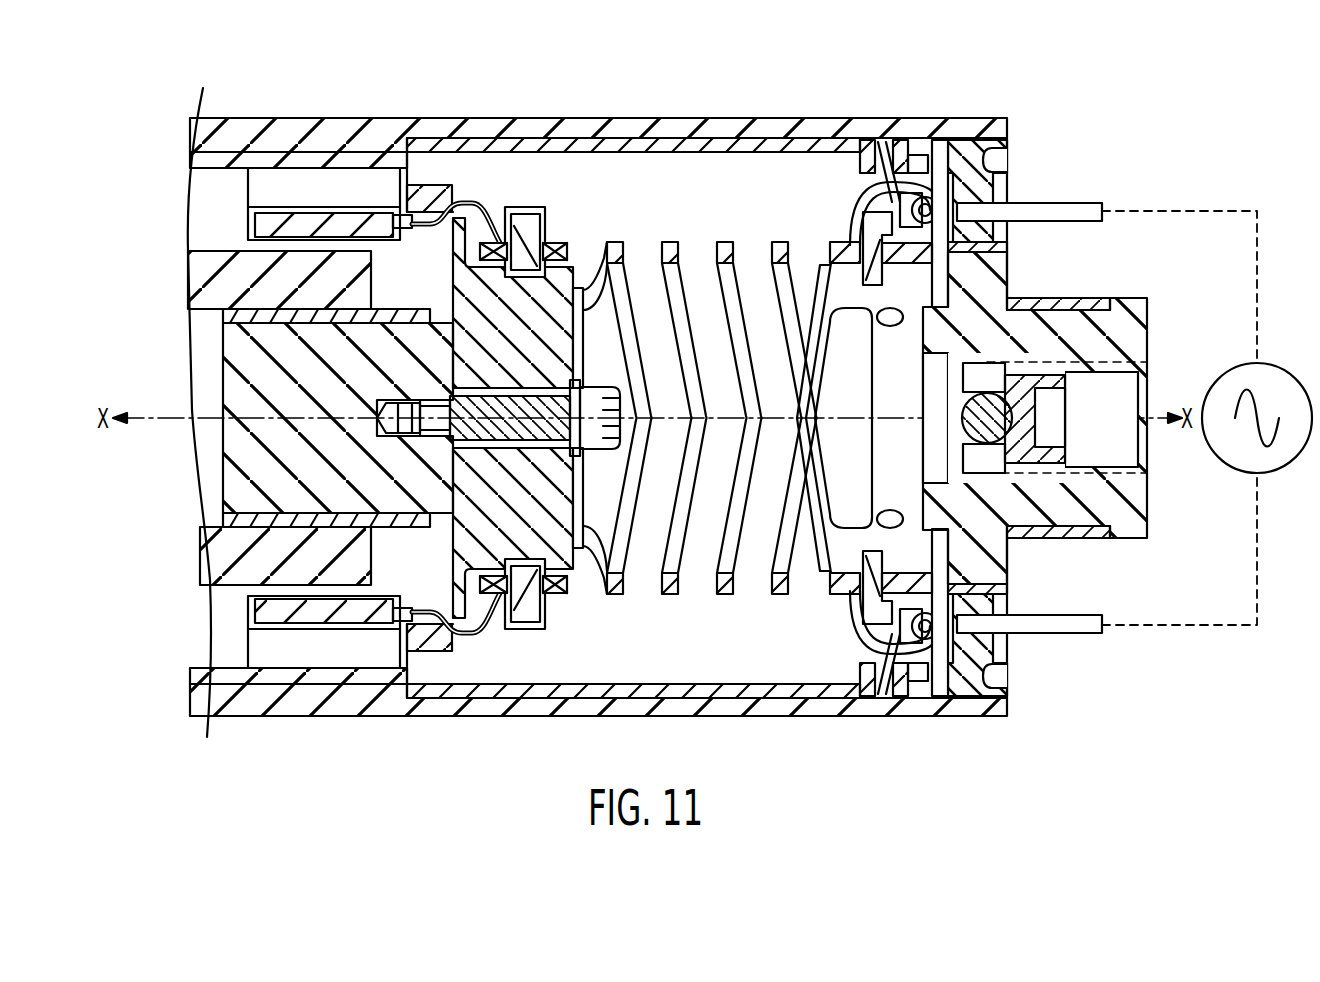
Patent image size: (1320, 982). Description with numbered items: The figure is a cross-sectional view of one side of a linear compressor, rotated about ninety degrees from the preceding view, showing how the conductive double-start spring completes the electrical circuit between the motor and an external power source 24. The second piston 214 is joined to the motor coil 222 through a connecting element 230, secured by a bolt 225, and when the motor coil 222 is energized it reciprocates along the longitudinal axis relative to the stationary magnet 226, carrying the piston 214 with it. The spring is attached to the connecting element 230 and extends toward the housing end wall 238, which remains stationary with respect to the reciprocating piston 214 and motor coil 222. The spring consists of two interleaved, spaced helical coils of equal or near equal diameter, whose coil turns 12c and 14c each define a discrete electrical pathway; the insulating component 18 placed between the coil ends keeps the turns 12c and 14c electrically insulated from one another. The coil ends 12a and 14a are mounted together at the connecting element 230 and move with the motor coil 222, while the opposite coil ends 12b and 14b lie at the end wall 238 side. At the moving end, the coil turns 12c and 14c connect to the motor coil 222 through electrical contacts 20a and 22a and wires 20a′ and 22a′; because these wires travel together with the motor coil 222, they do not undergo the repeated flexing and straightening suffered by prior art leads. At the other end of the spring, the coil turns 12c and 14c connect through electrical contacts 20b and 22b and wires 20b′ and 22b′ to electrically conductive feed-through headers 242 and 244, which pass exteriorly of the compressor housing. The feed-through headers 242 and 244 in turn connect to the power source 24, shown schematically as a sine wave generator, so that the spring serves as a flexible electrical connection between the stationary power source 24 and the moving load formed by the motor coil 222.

The first end of first coil 12a is at (574, 253).
The second end of first coil 12b is at (847, 265).
The first coil turns 12c is at (672, 243).
The first end of second coil 14a is at (570, 590).
The second end of second coil 14b is at (832, 573).
The second coil turns 14c is at (618, 243).
The second insulating component 18 is at (922, 265).
The electrical contact 20a is at (546, 213).
The wire 20a′ is at (458, 215).
The electrical contact 20b is at (861, 238).
The wire 20b′ is at (851, 200).
The electrical contact 22a is at (548, 610).
The wire 22a′ is at (500, 630).
The electrical contact 22b is at (861, 598).
The wire 22b′ is at (850, 640).
The power source 24 is at (1280, 367).
The second piston 214 is at (225, 460).
The motor coil 222 is at (377, 225).
The bolt 225 is at (608, 446).
The stationary magnet 226 is at (290, 188).
The connecting element 230 is at (565, 480).
The housing end wall 238 is at (1010, 582).
The feed-through header 242 is at (1052, 211).
The feed-through header 244 is at (1053, 626).